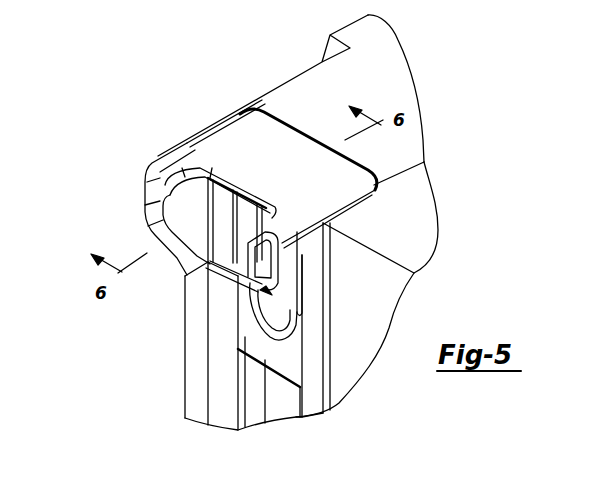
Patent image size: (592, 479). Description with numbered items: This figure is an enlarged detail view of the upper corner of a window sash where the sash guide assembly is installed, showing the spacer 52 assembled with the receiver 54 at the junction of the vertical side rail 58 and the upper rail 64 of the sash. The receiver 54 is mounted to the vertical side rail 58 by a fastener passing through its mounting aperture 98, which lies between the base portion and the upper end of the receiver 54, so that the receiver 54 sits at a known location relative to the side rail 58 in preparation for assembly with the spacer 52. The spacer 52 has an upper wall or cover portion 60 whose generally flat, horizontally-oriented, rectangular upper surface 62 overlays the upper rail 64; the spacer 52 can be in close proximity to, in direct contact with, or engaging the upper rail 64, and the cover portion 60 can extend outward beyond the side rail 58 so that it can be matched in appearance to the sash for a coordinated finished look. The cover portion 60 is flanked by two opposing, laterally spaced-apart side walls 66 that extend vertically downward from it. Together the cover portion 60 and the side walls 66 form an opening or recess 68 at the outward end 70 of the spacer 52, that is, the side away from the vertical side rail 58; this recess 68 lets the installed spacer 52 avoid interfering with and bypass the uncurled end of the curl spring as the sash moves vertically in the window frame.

The spacer 52 is at (275, 190).
The receiver 54 is at (280, 356).
The vertical side rail 58 is at (249, 326).
The cover portion 60 is at (347, 209).
The upper surface 62 is at (319, 185).
The upper rail 64 is at (293, 95).
The side walls 66 is at (186, 223).
The recess 68 is at (193, 198).
The outward end 70 is at (165, 187).
The mounting aperture 98 is at (258, 308).